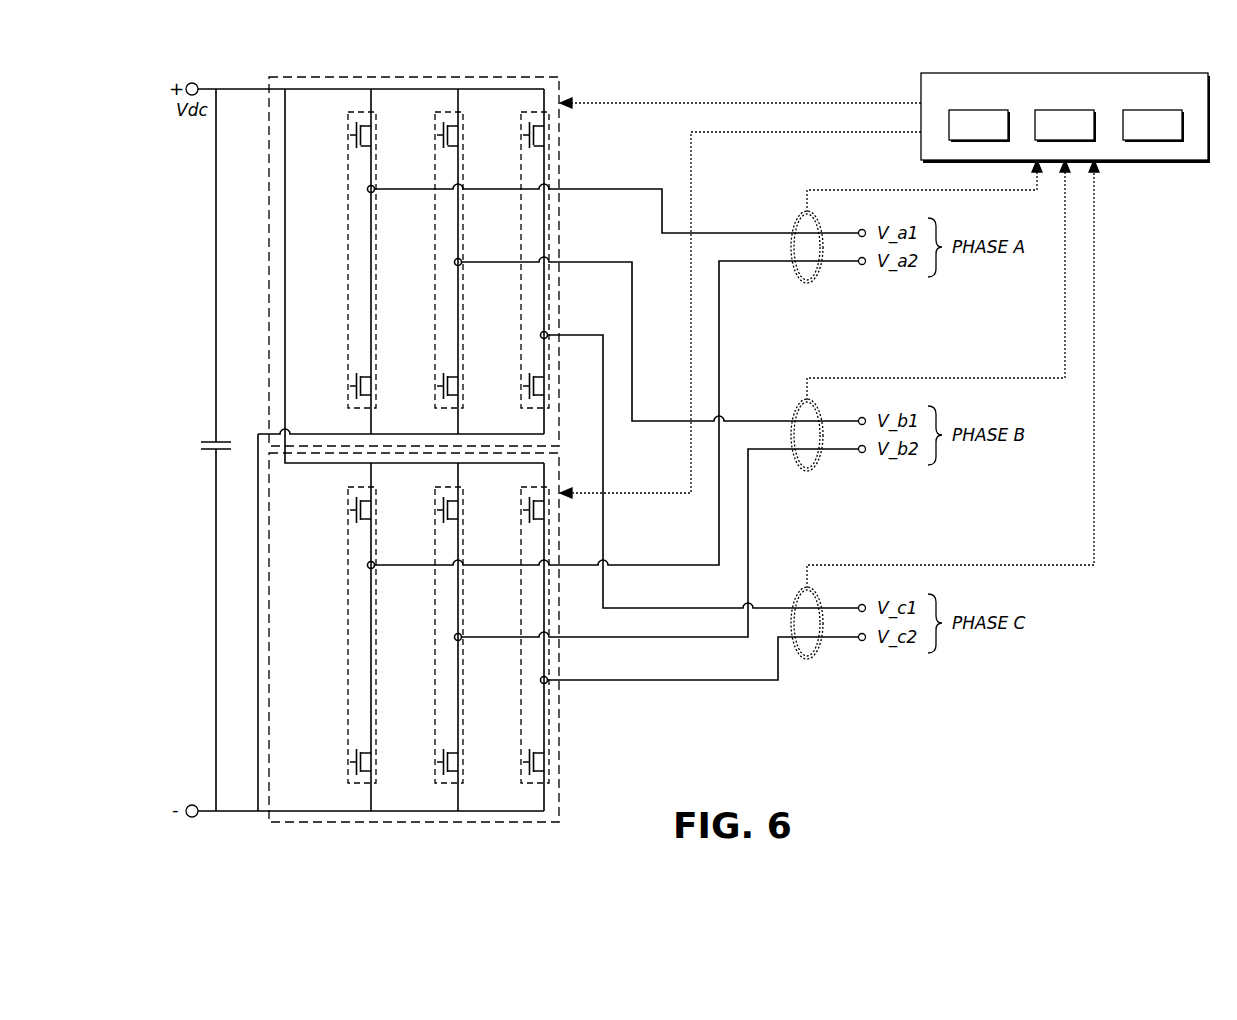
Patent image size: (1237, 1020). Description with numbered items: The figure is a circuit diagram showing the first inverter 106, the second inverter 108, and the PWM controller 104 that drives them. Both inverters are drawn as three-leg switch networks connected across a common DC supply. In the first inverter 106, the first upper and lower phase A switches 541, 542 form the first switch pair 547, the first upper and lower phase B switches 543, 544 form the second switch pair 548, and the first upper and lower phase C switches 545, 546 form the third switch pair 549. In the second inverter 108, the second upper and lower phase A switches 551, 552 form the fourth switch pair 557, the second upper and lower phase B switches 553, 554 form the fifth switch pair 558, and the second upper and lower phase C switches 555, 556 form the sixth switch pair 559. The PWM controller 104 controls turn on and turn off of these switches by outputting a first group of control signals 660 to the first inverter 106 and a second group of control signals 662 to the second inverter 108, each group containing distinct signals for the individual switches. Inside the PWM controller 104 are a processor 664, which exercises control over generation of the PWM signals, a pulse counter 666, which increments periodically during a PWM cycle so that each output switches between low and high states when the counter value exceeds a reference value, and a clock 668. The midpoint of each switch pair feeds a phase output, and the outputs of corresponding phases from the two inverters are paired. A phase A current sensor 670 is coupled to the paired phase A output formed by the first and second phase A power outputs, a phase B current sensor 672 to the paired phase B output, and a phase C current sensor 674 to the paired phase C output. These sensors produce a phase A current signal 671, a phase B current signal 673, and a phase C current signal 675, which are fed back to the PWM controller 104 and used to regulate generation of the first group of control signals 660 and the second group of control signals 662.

The PWM controller 104 is at (1157, 73).
The first inverter 106 is at (560, 135).
The second inverter 108 is at (560, 771).
The first upper phase A switch 541 is at (350, 135).
The first lower phase A switch 542 is at (350, 386).
The first upper phase B switch 543 is at (437, 135).
The first lower phase B switch 544 is at (437, 386).
The first upper phase C switch 545 is at (523, 135).
The first lower phase C switch 546 is at (523, 386).
The first switch pair 547 is at (348, 223).
The second switch pair 548 is at (435, 223).
The third switch pair 549 is at (521, 223).
The second upper phase A switch 551 is at (350, 510).
The second lower phase A switch 552 is at (350, 762).
The second upper phase B switch 553 is at (437, 510).
The second lower phase B switch 554 is at (437, 762).
The second upper phase C switch 555 is at (523, 510).
The second lower phase C switch 556 is at (523, 762).
The fourth switch pair 557 is at (348, 598).
The fifth switch pair 558 is at (435, 598).
The sixth switch pair 559 is at (521, 598).
The first group of control signals 660 is at (742, 103).
The second group of control signals 662 is at (742, 132).
The processor 664 is at (979, 126).
The pulse counter 666 is at (1065, 126).
The clock 668 is at (1153, 126).
The phase A current sensor 670 is at (797, 218).
The phase A current signal 671 is at (844, 190).
The phase B current sensor 672 is at (797, 408).
The phase B current signal 673 is at (846, 378).
The phase C current sensor 674 is at (799, 594).
The phase C current signal 675 is at (844, 565).